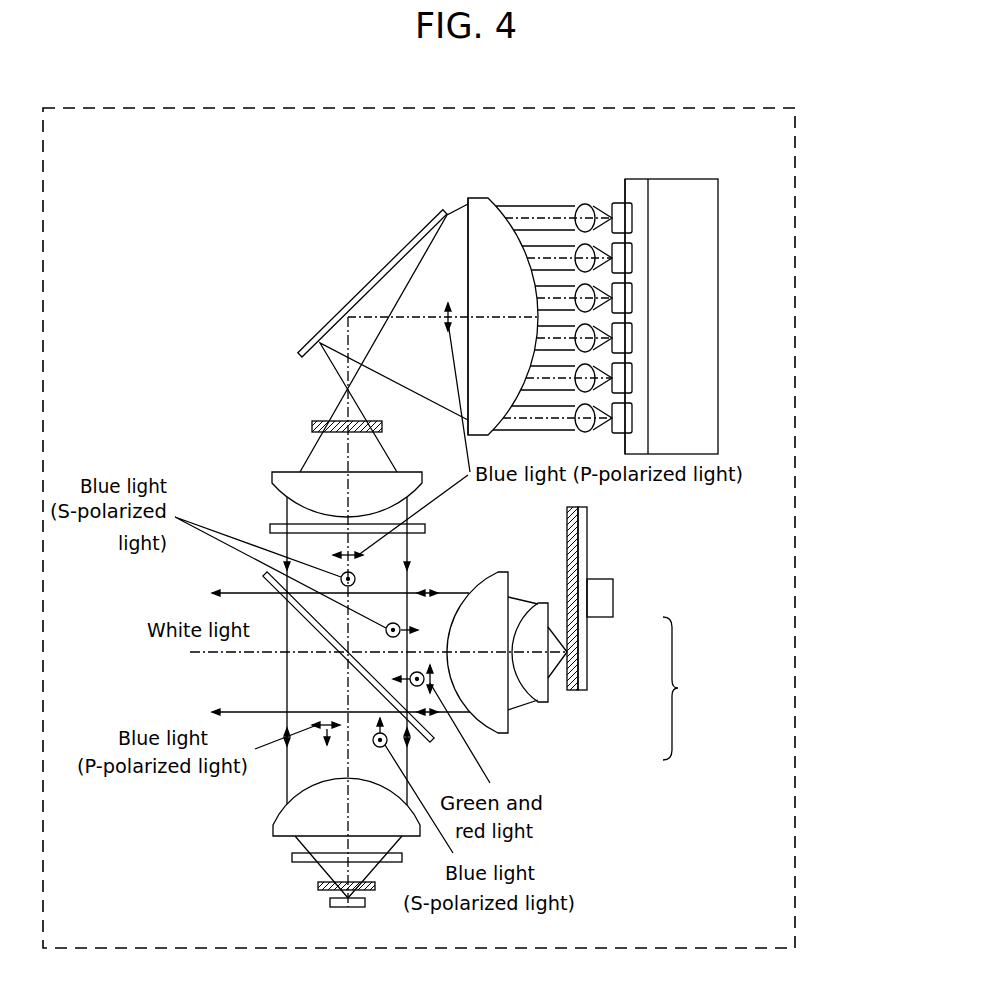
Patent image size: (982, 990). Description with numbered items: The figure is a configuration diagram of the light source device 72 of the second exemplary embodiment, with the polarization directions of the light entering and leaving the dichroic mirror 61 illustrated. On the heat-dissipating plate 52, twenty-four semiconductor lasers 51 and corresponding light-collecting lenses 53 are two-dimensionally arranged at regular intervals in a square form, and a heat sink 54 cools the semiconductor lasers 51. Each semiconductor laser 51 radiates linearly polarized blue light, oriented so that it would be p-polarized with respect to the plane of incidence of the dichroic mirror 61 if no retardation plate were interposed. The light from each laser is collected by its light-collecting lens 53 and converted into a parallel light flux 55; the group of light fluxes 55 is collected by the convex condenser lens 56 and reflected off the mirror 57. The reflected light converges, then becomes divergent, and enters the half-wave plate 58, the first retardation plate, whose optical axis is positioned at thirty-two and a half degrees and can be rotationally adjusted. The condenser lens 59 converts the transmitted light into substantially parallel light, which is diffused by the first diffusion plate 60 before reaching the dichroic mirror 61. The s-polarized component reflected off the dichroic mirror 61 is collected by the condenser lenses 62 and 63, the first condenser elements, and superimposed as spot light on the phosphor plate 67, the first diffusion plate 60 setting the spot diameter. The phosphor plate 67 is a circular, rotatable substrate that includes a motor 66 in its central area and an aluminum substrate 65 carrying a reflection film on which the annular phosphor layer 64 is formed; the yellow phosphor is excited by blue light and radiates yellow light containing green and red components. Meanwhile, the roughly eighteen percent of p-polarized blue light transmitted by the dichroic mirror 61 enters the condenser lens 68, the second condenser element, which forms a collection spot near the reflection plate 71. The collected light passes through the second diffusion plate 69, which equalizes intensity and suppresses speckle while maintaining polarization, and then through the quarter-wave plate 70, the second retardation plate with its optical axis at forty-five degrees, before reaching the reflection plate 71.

The semiconductor laser 51 is at (620, 200).
The heat-dissipating plate 52 is at (640, 178).
The light-collecting lens 53 is at (577, 202).
The heat sink 54 is at (725, 208).
The light flux 55 is at (513, 203).
The condenser lens 56 is at (467, 199).
The mirror 57 is at (405, 251).
The half-wave plate 58 is at (312, 424).
The condenser lens 59 is at (272, 478).
The first diffusion plate 60 is at (270, 527).
The dichroic mirror 61 is at (262, 573).
The condenser lens 62 is at (502, 733).
The condenser lens 63 is at (543, 702).
The phosphor layer 64 is at (577, 692).
The aluminum substrate 65 is at (587, 673).
The motor 66 is at (603, 617).
The phosphor plate 67 is at (685, 688).
The condenser lens 68 is at (273, 826).
The second diffusion plate 69 is at (292, 857).
The quarter-wave plate 70 is at (318, 884).
The reflection plate 71 is at (330, 900).
The light source device 72 is at (796, 660).